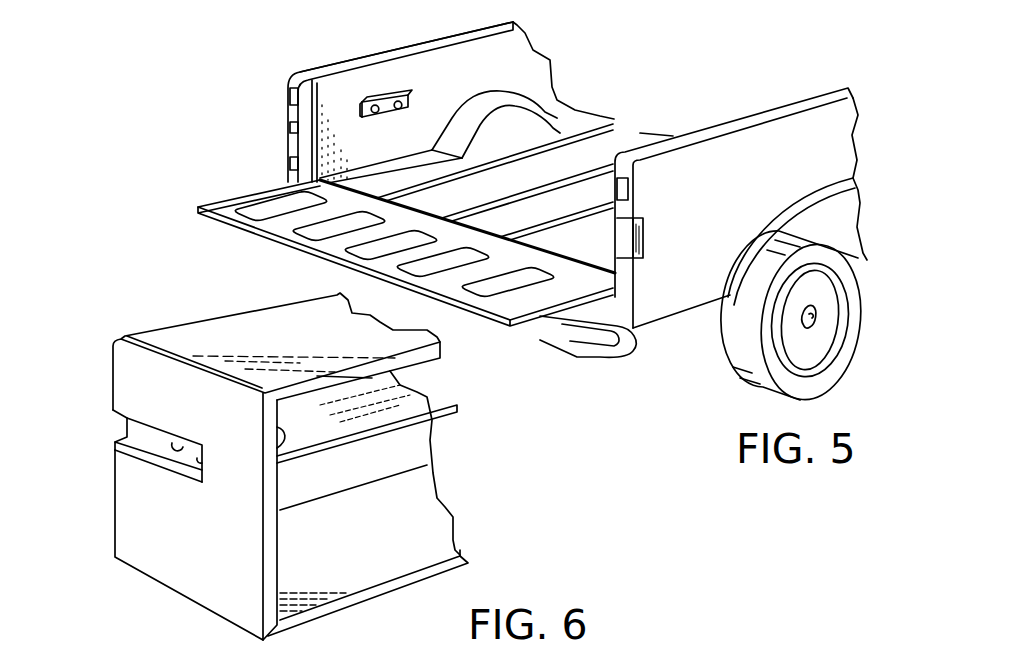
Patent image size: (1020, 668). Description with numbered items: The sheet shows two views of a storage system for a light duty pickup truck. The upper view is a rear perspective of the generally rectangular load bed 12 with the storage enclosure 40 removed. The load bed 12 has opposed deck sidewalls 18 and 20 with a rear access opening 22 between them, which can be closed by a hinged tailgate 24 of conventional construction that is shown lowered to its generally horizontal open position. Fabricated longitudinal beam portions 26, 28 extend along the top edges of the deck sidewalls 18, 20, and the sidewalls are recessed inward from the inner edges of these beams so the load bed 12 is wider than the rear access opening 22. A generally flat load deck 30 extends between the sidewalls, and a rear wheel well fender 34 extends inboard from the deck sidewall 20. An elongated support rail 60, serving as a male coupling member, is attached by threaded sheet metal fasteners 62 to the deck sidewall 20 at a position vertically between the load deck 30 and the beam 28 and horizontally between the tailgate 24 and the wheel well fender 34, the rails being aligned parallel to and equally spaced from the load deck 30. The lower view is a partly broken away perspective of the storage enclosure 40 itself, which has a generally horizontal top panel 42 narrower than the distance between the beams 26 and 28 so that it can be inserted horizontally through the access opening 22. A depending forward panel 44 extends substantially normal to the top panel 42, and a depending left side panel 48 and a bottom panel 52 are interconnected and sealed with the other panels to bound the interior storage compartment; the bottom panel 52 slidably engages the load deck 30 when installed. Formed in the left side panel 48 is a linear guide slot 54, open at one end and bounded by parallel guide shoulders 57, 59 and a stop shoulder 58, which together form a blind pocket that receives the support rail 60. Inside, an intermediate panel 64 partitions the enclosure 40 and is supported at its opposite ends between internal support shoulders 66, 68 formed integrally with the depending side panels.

In FIG. 5, the load bed 12 is at (696, 53).
In FIG. 5, the deck sidewall 18 is at (818, 125).
In FIG. 5, the deck sidewall 20 is at (520, 60).
In FIG. 5, the rear access opening 22 is at (345, 140).
In FIG. 5, the tailgate 24 is at (241, 239).
In FIG. 5, the longitudinal beam portion 26 is at (745, 117).
In FIG. 5, the longitudinal beam portion 28 is at (372, 56).
In FIG. 5, the load deck 30 is at (616, 139).
In FIG. 5, the rear wheel well fender 34 is at (531, 114).
In FIG. 5, the support rail 60 is at (389, 113).
In FIG. 5, the threaded sheet metal fastener 62 is at (408, 100).
In FIG. 6, the storage enclosure 40 is at (111, 319).
In FIG. 6, the top panel 42 is at (307, 348).
In FIG. 6, the depending forward panel 44 is at (408, 446).
In FIG. 6, the left side panel 48 is at (200, 578).
In FIG. 6, the bottom panel 52 is at (424, 522).
In FIG. 6, the guide slot 54 is at (140, 433).
In FIG. 6, the guide shoulder 57 is at (176, 442).
In FIG. 6, the stop shoulder 58 is at (203, 465).
In FIG. 6, the guide shoulder 59 is at (160, 455).
In FIG. 6, the intermediate panel 64 is at (420, 403).
In FIG. 6, the internal support shoulder 66 is at (300, 482).
In FIG. 6, the internal support shoulder 68 is at (283, 441).